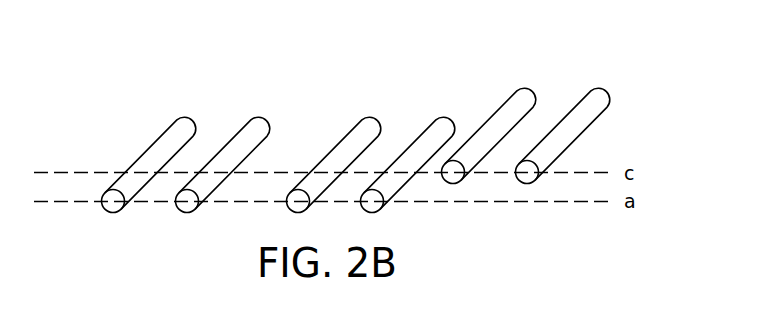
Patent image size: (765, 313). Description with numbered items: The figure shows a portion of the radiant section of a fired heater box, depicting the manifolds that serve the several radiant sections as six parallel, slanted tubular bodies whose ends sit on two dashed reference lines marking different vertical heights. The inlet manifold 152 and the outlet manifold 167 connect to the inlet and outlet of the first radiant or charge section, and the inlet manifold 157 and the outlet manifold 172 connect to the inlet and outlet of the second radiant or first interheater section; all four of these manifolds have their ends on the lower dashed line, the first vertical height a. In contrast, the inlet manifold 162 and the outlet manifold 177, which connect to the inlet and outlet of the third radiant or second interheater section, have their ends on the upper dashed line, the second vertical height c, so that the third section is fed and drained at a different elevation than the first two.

The inlet manifold 152 is at (153, 156).
The outlet manifold 167 is at (259, 133).
The inlet manifold 157 is at (343, 152).
The outlet manifold 172 is at (433, 134).
The inlet manifold 162 is at (527, 104).
The outlet manifold 177 is at (602, 103).